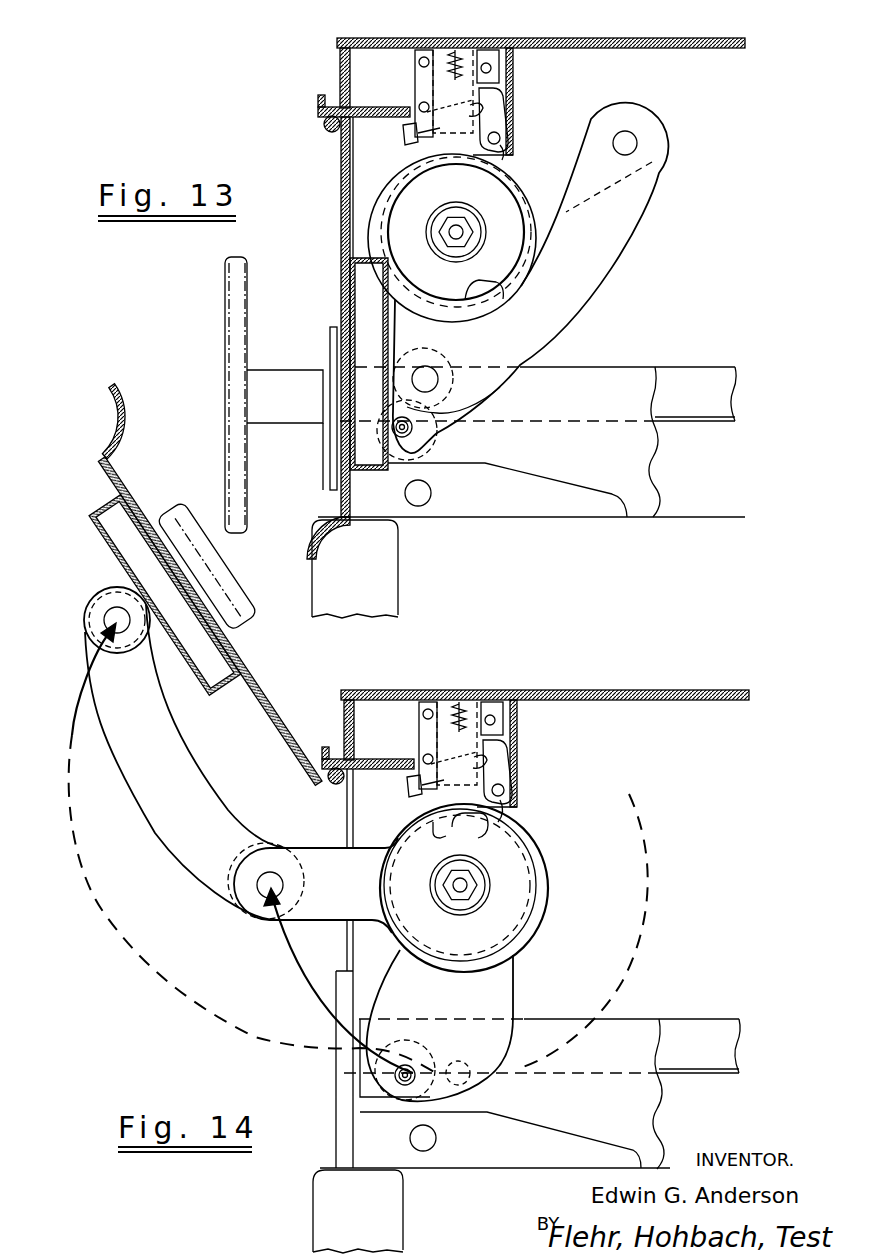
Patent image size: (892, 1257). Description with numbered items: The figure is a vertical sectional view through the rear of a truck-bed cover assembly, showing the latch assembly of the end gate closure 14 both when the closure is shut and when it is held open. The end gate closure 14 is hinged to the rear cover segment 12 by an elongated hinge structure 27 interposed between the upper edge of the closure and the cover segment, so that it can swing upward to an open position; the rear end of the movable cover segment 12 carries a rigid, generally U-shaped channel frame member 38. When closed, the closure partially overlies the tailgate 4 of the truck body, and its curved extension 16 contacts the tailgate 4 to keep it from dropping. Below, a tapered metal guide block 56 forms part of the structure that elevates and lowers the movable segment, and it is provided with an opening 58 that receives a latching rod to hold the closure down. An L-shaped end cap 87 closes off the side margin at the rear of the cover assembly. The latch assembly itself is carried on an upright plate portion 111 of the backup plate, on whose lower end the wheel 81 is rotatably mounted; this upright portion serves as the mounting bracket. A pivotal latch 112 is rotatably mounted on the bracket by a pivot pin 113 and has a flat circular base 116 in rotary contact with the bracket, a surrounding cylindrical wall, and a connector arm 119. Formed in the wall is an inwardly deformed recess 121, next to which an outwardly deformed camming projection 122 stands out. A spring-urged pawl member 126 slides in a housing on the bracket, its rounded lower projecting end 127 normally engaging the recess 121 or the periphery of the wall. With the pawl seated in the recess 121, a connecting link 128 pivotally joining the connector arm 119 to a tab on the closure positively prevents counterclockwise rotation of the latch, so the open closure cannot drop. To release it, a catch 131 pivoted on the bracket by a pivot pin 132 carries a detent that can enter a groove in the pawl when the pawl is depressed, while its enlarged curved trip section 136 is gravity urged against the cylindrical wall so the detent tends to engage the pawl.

In FIG. 13, the tailgate 4 is at (385, 570).
In FIG. 14, the tailgate 4 is at (313, 1215).
In FIG. 13, the rear cover segment 12 is at (680, 38).
In FIG. 14, the rear cover segment 12 is at (690, 692).
In FIG. 13, the end gate closure 14 is at (340, 300).
In FIG. 13, the curved extension 16 is at (122, 395).
In FIG. 13, the hinge structure 27 is at (326, 131).
In FIG. 14, the hinge structure 27 is at (331, 784).
In FIG. 13, the channel frame member 38 is at (392, 49).
In FIG. 14, the channel frame member 38 is at (395, 703).
In FIG. 13, the tapered guide block 56 is at (560, 478).
In FIG. 14, the tapered guide block 56 is at (550, 1135).
In FIG. 13, the opening 58 is at (432, 495).
In FIG. 14, the opening 58 is at (436, 1142).
In FIG. 13, the wheel 81 is at (427, 450).
In FIG. 14, the wheel 81 is at (440, 1105).
In FIG. 13, the end cap 87 is at (335, 488).
In FIG. 14, the end cap 87 is at (336, 1113).
In FIG. 14, the upright plate portion 111 is at (455, 1005).
In FIG. 13, the pivotal latch 112 is at (475, 212).
In FIG. 14, the pivotal latch 112 is at (498, 888).
In FIG. 13, the pivot pin 113 is at (460, 232).
In FIG. 14, the pivot pin 113 is at (462, 887).
In FIG. 13, the circular base 116 is at (432, 200).
In FIG. 14, the circular base 116 is at (424, 868).
In FIG. 13, the connector arm 119 is at (574, 168).
In FIG. 14, the connector arm 119 is at (350, 892).
In FIG. 13, the recess 121 is at (468, 290).
In FIG. 14, the recess 121 is at (488, 832).
In FIG. 14, the camming projection 122 is at (437, 834).
In FIG. 14, the pawl member 126 is at (440, 785).
In FIG. 13, the lower projecting end 127 is at (505, 150).
In FIG. 14, the lower projecting end 127 is at (500, 820).
In FIG. 13, the connecting link 128 is at (592, 270).
In FIG. 14, the connecting link 128 is at (169, 783).
In FIG. 13, the catch 131 is at (490, 113).
In FIG. 14, the catch 131 is at (496, 767).
In FIG. 13, the pivot pin 132 is at (505, 128).
In FIG. 14, the pivot pin 132 is at (506, 790).
In FIG. 13, the trip section 136 is at (402, 140).
In FIG. 14, the trip section 136 is at (404, 795).